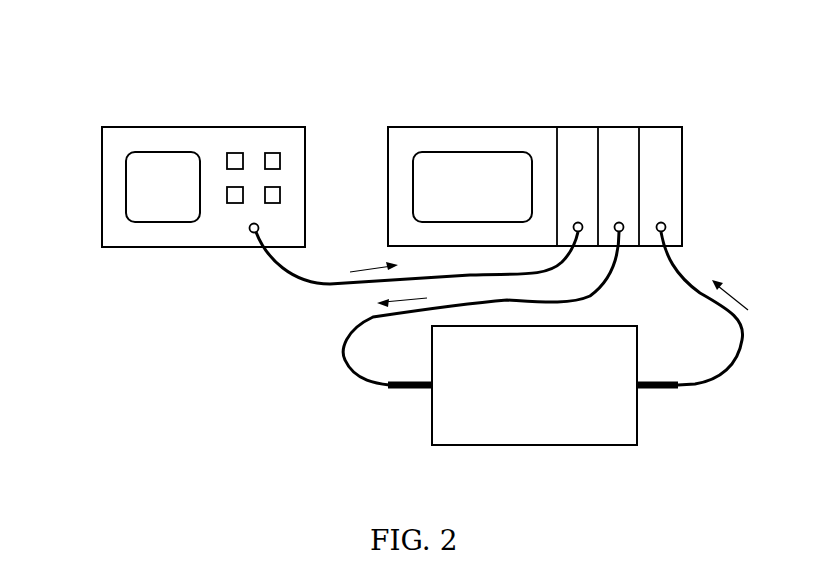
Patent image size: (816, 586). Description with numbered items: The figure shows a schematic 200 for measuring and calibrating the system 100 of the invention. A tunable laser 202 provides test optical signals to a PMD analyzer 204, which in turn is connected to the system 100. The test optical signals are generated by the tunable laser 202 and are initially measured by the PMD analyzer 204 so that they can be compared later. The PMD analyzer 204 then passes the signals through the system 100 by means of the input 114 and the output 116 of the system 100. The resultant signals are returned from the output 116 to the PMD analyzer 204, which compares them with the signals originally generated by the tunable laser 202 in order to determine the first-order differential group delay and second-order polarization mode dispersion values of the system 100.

The schematic 200 is at (131, 73).
The tunable laser 202 is at (143, 237).
The PMD analyzer 204 is at (430, 135).
The system 100 is at (548, 390).
The input 114 is at (385, 392).
The output 116 is at (680, 392).